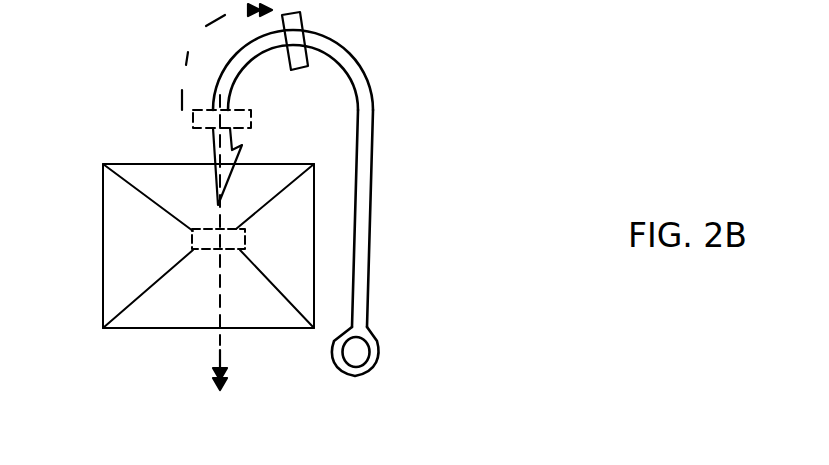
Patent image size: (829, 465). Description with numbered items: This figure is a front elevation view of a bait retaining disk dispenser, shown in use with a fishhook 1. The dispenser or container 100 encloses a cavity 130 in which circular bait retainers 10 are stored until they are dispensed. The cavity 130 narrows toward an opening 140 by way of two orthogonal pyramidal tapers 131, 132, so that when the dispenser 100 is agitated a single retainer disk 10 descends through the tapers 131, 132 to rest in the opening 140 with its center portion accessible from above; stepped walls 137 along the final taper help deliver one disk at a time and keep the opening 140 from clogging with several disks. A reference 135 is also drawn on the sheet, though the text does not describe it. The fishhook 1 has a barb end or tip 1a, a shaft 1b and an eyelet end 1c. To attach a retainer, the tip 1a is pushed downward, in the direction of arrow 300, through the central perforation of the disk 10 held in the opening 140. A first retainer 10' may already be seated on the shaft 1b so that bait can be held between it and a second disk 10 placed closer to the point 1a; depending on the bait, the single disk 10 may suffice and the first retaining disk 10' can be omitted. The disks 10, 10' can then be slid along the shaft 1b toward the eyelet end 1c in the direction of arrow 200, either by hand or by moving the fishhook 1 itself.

The fishhook 1 is at (727, 464).
The barb end 1a is at (213, 183).
The fishhook shaft 1b is at (385, 163).
The eyelet end 1c is at (437, 320).
The bait retainer 10 is at (681, 7).
The first retainer disk 10' is at (340, 35).
The container 100 is at (552, 183).
The cavity 130 is at (99, 222).
The pyramidal taper 131 is at (430, 157).
The pyramidal taper 132 is at (323, 405).
The block base 135 is at (67, 459).
The stepped walls 137 is at (555, 17).
The opening 140 is at (193, 232).
The arrow 200 is at (212, 57).
The arrow 300 is at (189, 374).